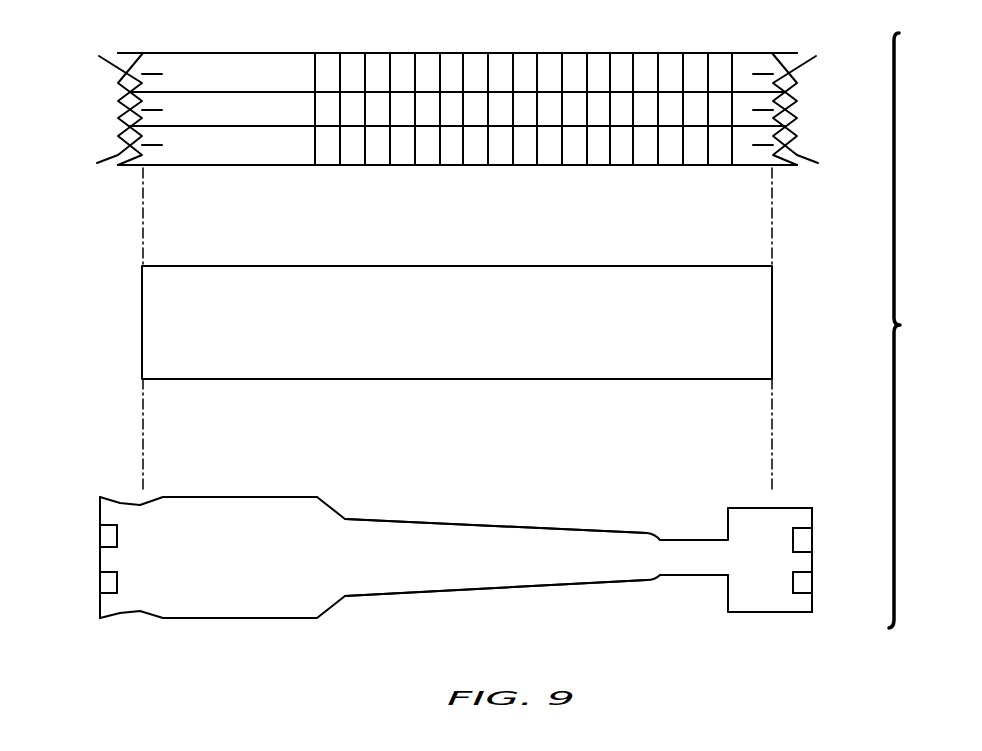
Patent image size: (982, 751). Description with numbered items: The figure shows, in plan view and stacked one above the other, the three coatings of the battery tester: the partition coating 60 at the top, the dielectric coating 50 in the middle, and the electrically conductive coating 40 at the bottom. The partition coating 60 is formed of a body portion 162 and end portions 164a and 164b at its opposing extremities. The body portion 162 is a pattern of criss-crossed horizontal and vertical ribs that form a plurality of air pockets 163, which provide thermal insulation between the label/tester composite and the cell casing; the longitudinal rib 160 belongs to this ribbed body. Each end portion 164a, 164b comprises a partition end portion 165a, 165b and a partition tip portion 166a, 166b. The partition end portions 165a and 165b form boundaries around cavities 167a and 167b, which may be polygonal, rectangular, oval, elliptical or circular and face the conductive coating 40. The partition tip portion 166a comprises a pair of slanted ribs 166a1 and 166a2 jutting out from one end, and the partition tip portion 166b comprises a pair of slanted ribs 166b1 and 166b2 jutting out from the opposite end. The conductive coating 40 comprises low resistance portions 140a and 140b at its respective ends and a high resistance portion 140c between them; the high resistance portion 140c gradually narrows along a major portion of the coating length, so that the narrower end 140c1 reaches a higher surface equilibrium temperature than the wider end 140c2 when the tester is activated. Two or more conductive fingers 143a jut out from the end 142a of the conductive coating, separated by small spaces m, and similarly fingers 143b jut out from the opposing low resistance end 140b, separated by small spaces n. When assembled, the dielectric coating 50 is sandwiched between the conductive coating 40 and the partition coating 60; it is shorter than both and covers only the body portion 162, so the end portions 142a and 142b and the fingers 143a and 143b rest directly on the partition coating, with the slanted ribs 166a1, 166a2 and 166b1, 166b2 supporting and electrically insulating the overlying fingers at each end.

The conductive coating 40 is at (585, 532).
The dielectric coating 50 is at (345, 266).
The partition coating 60 is at (575, 53).
The low resistance portion 140a is at (232, 497).
The low resistance portion 140b is at (755, 484).
The high resistance portion 140c is at (424, 522).
The narrower end 140c1 is at (600, 585).
The wider end 140c2 is at (427, 597).
The conductive portion end 142a is at (118, 500).
The conductive portion end 142b is at (800, 508).
The conductive fingers 143a is at (100, 563).
The conductive fingers 143b is at (812, 563).
The small spaces m is at (105, 540).
The small spaces n is at (805, 541).
The longitudinal wire 160 is at (390, 140).
The body portion 162 is at (440, 53).
The air pockets 163 is at (551, 153).
The end portion 164a is at (118, 53).
The end portion 164b is at (797, 60).
The partition end portion 165a is at (124, 124).
The partition end portion 165b is at (796, 108).
The partition tip portion 166a is at (96, 57).
The slanted rib 166a1 is at (102, 74).
The slanted rib 166a2 is at (104, 160).
The partition tip portion 166b is at (818, 57).
The slanted rib 166b1 is at (808, 76).
The slanted rib 166b2 is at (810, 162).
The cavity 167a is at (128, 130).
The cavity 167b is at (792, 132).